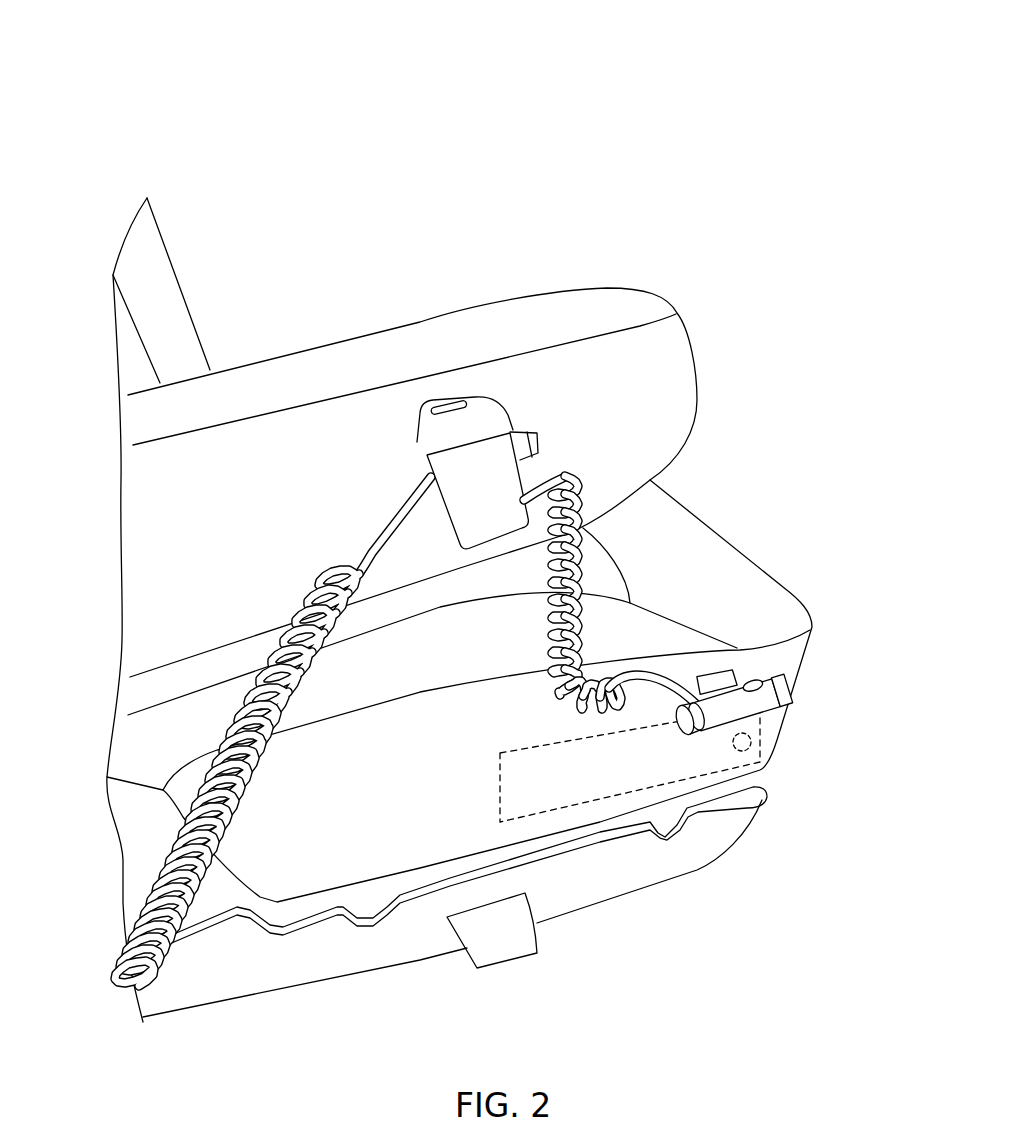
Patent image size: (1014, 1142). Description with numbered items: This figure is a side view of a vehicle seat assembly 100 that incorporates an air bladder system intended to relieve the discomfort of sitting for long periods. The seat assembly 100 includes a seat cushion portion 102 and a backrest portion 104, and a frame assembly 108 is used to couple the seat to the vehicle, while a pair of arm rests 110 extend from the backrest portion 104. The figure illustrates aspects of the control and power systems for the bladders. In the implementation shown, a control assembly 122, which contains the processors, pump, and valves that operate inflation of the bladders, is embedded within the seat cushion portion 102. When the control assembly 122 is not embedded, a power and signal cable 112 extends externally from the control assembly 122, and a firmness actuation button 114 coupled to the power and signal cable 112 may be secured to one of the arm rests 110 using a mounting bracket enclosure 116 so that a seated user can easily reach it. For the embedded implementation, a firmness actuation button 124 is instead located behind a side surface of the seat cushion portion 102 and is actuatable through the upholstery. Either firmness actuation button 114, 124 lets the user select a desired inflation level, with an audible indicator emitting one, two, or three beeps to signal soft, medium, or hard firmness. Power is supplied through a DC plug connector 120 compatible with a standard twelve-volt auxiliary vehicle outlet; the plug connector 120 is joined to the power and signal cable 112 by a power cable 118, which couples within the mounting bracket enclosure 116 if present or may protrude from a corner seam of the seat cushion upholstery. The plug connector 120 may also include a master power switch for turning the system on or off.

The vehicle seat assembly 100 is at (104, 106).
The seat cushion portion 102 is at (727, 580).
The backrest portion 104 is at (172, 302).
The frame assembly 108 is at (640, 863).
The arm rests 110 is at (690, 328).
The power and signal cable 112 is at (293, 710).
The firmness actuation button 114 is at (543, 440).
The mounting bracket enclosure 116 is at (417, 410).
The power cable 118 is at (543, 637).
The DC plug connector 120 is at (797, 663).
The control assembly 122 is at (695, 773).
The firmness actuation button 124 is at (750, 750).